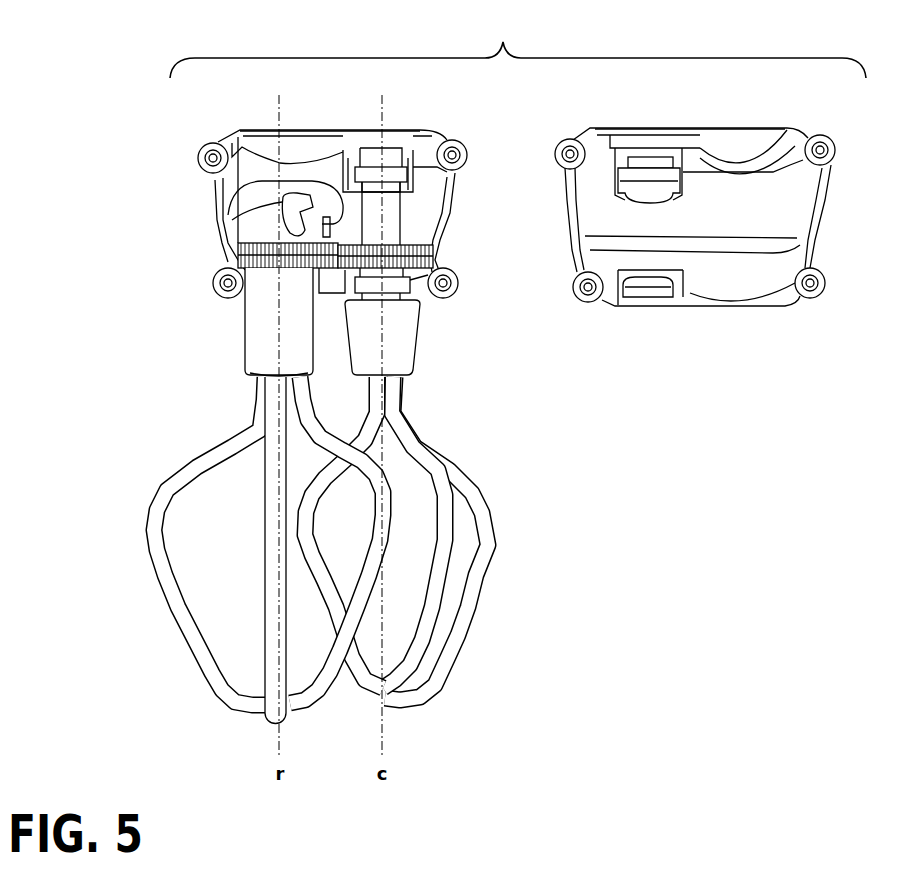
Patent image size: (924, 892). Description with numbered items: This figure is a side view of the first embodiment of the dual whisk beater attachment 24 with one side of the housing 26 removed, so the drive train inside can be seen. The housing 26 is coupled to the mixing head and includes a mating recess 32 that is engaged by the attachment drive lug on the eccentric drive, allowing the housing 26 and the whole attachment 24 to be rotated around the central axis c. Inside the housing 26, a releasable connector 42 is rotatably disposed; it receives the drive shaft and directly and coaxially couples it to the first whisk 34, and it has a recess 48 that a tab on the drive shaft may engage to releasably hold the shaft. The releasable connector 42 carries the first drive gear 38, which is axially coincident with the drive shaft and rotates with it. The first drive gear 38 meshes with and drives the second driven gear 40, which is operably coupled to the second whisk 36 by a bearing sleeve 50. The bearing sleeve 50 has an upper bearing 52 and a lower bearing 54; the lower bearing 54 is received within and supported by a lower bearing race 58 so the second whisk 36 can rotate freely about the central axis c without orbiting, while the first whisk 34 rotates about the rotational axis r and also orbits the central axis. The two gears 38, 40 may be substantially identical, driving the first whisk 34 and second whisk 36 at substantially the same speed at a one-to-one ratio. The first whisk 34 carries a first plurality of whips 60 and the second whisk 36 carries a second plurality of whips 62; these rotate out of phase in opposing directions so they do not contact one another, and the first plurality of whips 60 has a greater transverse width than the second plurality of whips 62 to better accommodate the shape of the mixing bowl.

The dual whisk beater attachment 24 is at (518, 47).
The housing 26 is at (235, 175).
The mating recess 32 is at (388, 143).
The first whisk 34 is at (260, 342).
The second whisk 36 is at (402, 348).
The first drive gear 38 is at (247, 250).
The second driven gear 40 is at (418, 255).
The releasable connector 42 is at (247, 192).
The recess 48 is at (293, 213).
The bearing sleeve 50 is at (395, 227).
The upper bearing 52 is at (402, 182).
The lower bearing 54 is at (395, 295).
The lower bearing race 58 is at (648, 293).
The first plurality of whips 60 is at (152, 563).
The second plurality of whips 62 is at (493, 563).